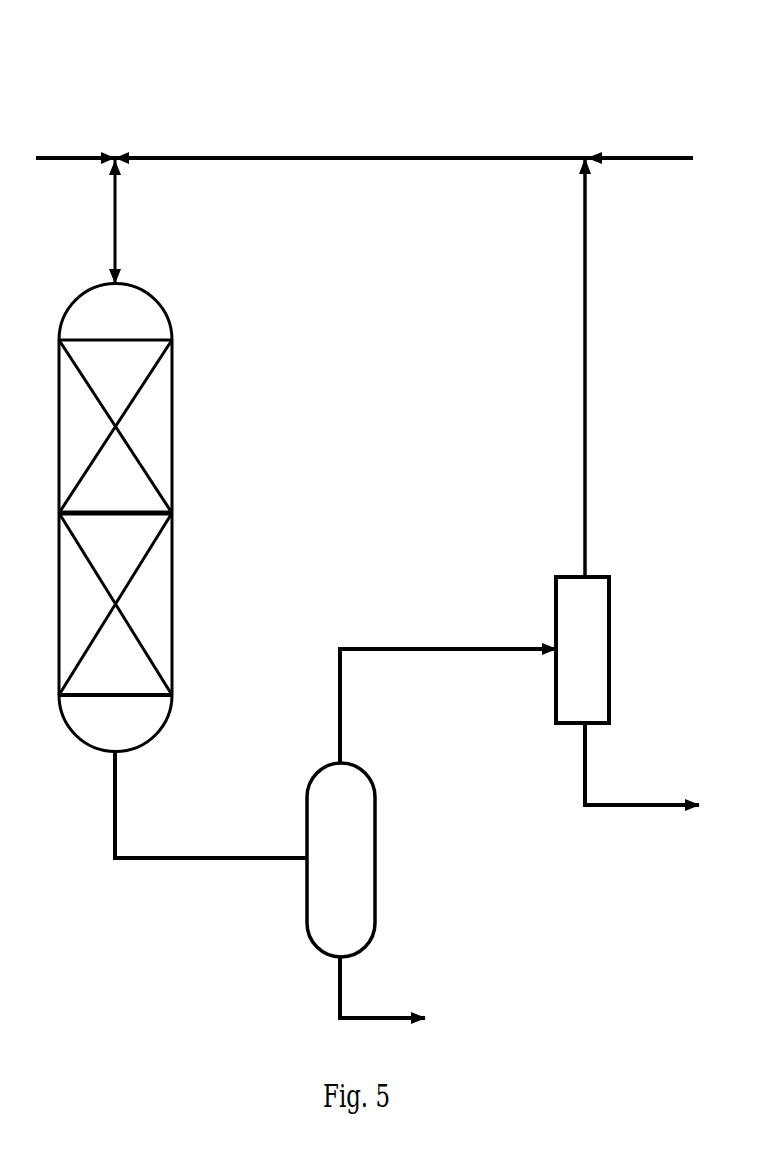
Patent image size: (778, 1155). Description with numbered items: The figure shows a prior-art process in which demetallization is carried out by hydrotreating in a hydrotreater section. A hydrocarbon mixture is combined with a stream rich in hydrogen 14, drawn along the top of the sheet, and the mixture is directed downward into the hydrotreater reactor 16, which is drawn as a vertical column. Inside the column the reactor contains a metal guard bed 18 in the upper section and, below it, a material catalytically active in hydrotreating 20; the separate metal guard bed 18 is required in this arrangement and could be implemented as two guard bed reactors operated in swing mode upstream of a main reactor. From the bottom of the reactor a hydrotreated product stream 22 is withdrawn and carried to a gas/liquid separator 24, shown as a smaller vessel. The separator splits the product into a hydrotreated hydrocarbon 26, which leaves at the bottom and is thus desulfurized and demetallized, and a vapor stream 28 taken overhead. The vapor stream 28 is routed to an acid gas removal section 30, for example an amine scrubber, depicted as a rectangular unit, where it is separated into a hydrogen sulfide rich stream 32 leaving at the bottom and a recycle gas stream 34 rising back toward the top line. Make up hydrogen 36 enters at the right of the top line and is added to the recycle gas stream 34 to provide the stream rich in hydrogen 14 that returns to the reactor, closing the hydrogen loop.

The stream rich in hydrogen 14 is at (308, 162).
The hydrotreater reactor 16 is at (155, 315).
The metal guard bed 18 is at (155, 472).
The material catalytically active in hydrotreating 20 is at (155, 603).
The hydrotreated product stream 22 is at (278, 855).
The gas/liquid separator 24 is at (375, 795).
The hydrotreated hydrocarbon 26 is at (378, 1017).
The vapor stream 28 is at (502, 645).
The acid gas removal section 30 is at (568, 573).
The hydrogen sulfide rich stream 32 is at (660, 798).
The recycle gas stream 34 is at (588, 232).
The make up hydrogen 36 is at (658, 158).